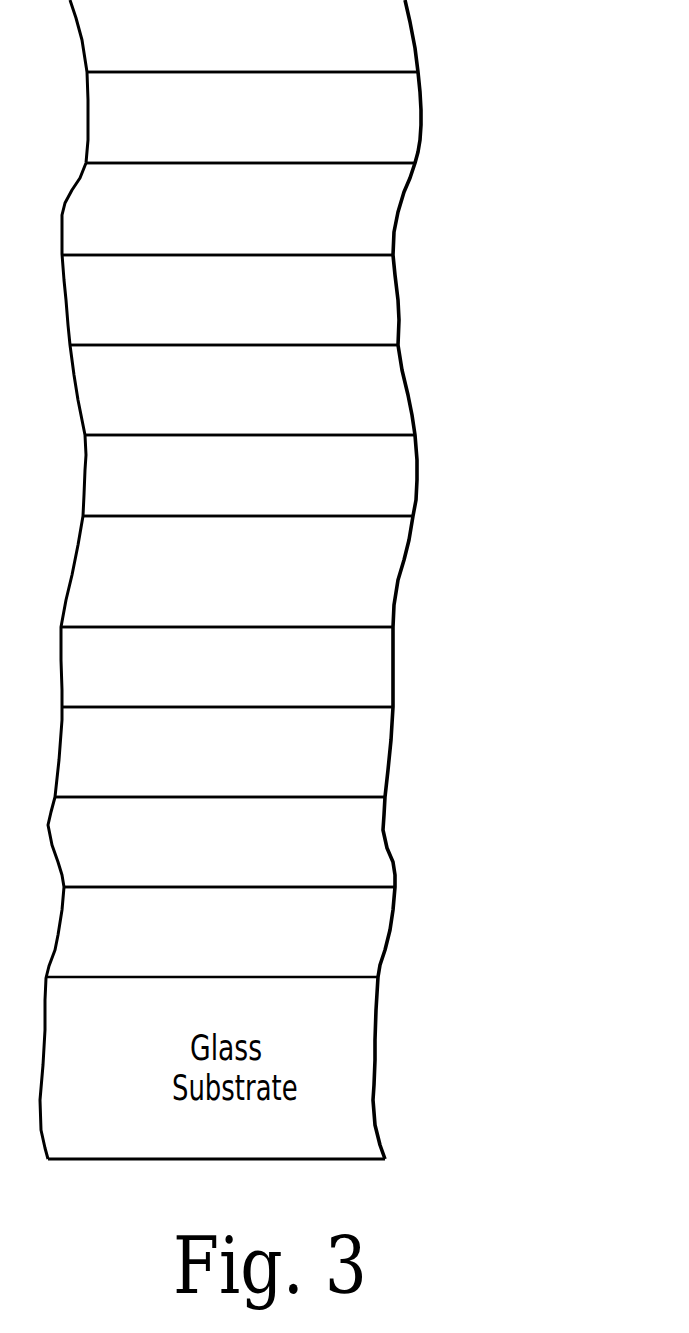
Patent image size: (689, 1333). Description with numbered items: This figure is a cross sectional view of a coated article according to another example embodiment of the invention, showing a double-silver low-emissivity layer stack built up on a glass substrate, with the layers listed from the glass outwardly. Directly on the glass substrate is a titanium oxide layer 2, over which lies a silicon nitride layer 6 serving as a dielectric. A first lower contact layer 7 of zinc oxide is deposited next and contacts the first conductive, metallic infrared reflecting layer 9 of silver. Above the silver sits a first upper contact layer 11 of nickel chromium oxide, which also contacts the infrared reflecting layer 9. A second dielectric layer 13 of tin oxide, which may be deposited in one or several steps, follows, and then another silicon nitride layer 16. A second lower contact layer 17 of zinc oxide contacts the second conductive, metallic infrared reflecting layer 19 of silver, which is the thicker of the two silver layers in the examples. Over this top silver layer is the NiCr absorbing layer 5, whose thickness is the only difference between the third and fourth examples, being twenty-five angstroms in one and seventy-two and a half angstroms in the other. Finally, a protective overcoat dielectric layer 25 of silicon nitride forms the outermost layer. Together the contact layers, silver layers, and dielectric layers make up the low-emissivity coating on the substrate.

The protective overcoat dielectric layer 25 is at (402, 35).
The absorbing layer 5 is at (400, 125).
The second IR reflecting layer 19 is at (375, 225).
The second lower contact layer 17 is at (382, 315).
The silicon nitride layer 16 is at (392, 403).
The second dielectric layer 13 is at (407, 490).
The first upper contact layer 11 is at (383, 580).
The first IR reflecting layer 9 is at (387, 682).
The first lower contact layer 7 is at (378, 765).
The silicon nitride layer 6 is at (377, 847).
The titanium oxide layer 2 is at (377, 947).